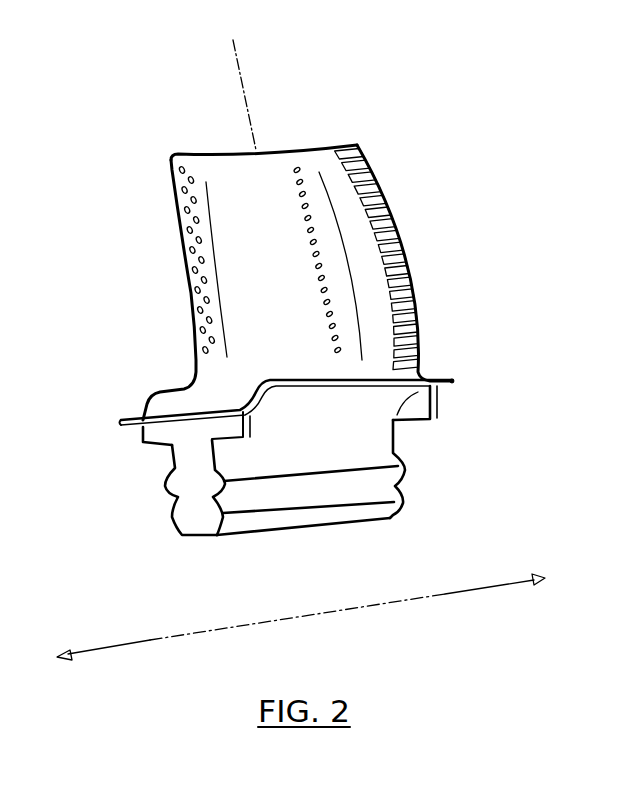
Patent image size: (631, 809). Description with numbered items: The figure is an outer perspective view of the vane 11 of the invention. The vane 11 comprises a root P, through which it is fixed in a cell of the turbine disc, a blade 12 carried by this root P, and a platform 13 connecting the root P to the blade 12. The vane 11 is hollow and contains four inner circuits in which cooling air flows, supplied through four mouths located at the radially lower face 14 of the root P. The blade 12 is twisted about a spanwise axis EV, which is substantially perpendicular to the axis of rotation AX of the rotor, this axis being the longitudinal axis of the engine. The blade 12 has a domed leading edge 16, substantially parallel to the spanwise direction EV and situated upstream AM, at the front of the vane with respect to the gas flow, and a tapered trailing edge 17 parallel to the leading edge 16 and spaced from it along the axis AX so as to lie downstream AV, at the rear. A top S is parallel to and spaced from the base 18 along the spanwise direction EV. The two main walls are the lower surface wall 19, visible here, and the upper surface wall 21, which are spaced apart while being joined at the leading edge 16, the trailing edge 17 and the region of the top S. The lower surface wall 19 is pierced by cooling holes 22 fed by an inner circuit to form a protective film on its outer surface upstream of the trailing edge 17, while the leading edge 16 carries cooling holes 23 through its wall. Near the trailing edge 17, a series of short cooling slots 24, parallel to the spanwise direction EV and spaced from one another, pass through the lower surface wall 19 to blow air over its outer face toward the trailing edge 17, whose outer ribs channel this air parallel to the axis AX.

The vane 11 is at (146, 96).
The blade 12 is at (401, 129).
The platform 13 is at (466, 386).
The radially lower face 14 is at (330, 533).
The leading edge 16 is at (177, 213).
The trailing edge 17 is at (385, 192).
The base 18 is at (313, 356).
The lower surface wall 19 is at (282, 268).
The upper surface wall 21 is at (176, 245).
The cooling holes 22 is at (313, 208).
The cooling holes 23 is at (200, 307).
The cooling slots 24 is at (407, 284).
The top S is at (218, 153).
The spanwise axis EV is at (238, 70).
The root P is at (314, 446).
The axis of rotation AX is at (183, 637).
The upstream AM is at (113, 651).
The downstream AV is at (497, 587).